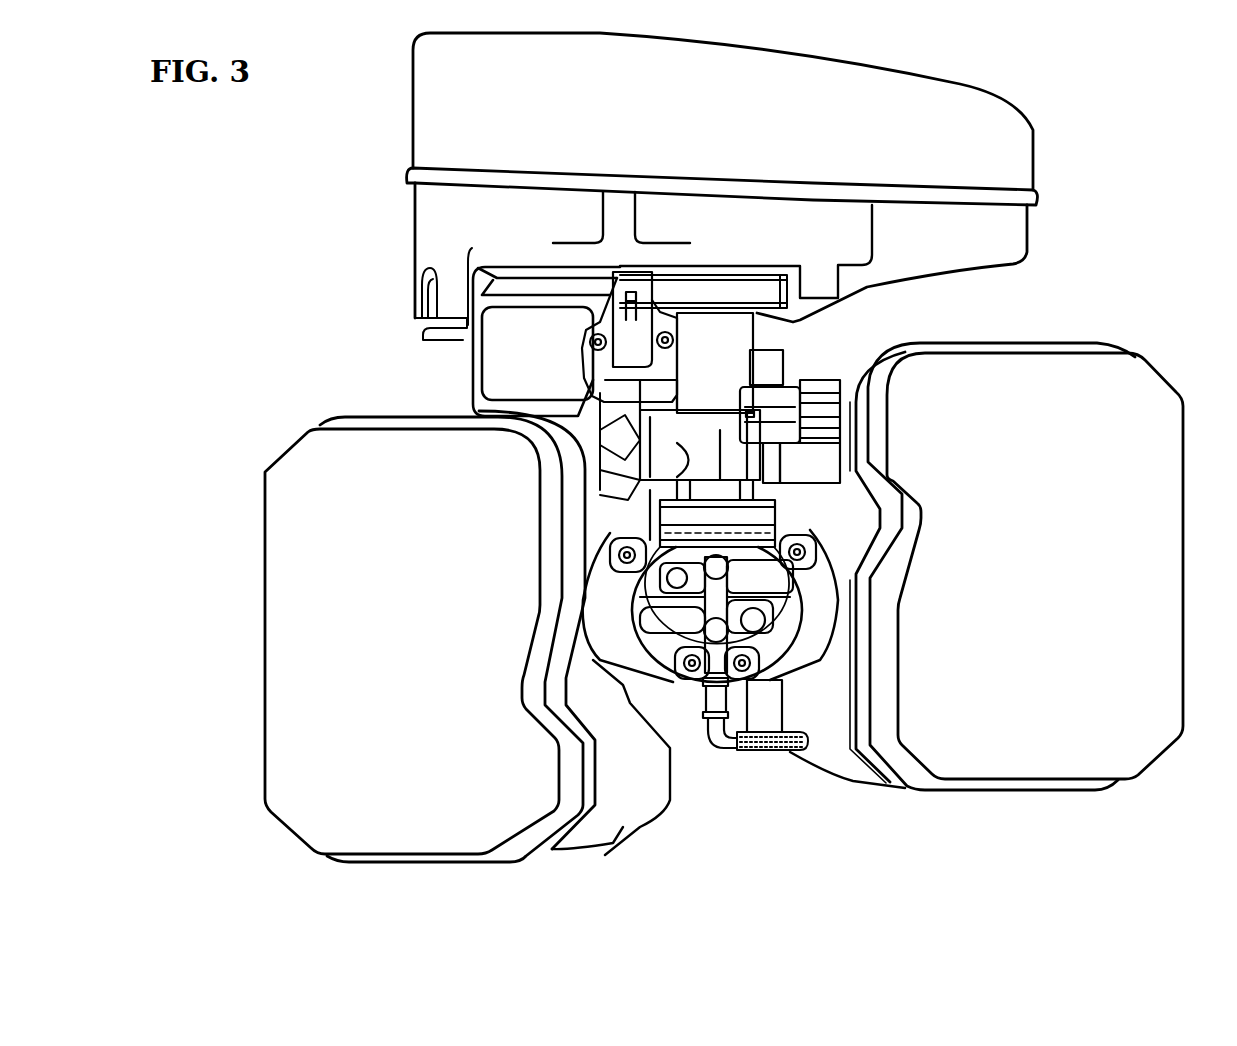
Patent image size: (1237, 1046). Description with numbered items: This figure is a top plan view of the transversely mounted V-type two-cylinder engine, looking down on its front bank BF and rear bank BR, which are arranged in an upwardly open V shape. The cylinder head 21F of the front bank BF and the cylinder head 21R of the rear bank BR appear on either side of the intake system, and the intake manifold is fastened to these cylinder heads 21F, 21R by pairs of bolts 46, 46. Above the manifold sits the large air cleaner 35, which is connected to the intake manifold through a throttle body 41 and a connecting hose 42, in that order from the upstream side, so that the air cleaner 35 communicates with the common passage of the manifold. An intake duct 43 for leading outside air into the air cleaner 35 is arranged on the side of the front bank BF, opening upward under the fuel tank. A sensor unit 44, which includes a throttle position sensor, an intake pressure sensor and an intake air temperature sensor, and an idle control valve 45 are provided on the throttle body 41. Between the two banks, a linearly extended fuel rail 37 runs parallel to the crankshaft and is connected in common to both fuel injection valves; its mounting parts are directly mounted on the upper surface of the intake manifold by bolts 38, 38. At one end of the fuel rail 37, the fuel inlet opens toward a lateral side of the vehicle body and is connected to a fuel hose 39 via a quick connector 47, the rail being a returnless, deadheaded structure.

The air cleaner 35 is at (722, 186).
The fuel rail 37 is at (790, 603).
The bolt 38 is at (663, 543).
The fuel hose 39 is at (773, 750).
The throttle body 41 is at (728, 347).
The connecting hose 42 is at (760, 515).
The intake duct 43 is at (473, 385).
The sensor unit 44 is at (827, 455).
The idle control valve 45 is at (617, 380).
The bolt 46 is at (637, 543).
The quick connector 47 is at (700, 698).
The cylinder head 21F is at (623, 827).
The cylinder head 21R is at (848, 778).
The front bank BF is at (345, 418).
The rear bank BR is at (1123, 335).